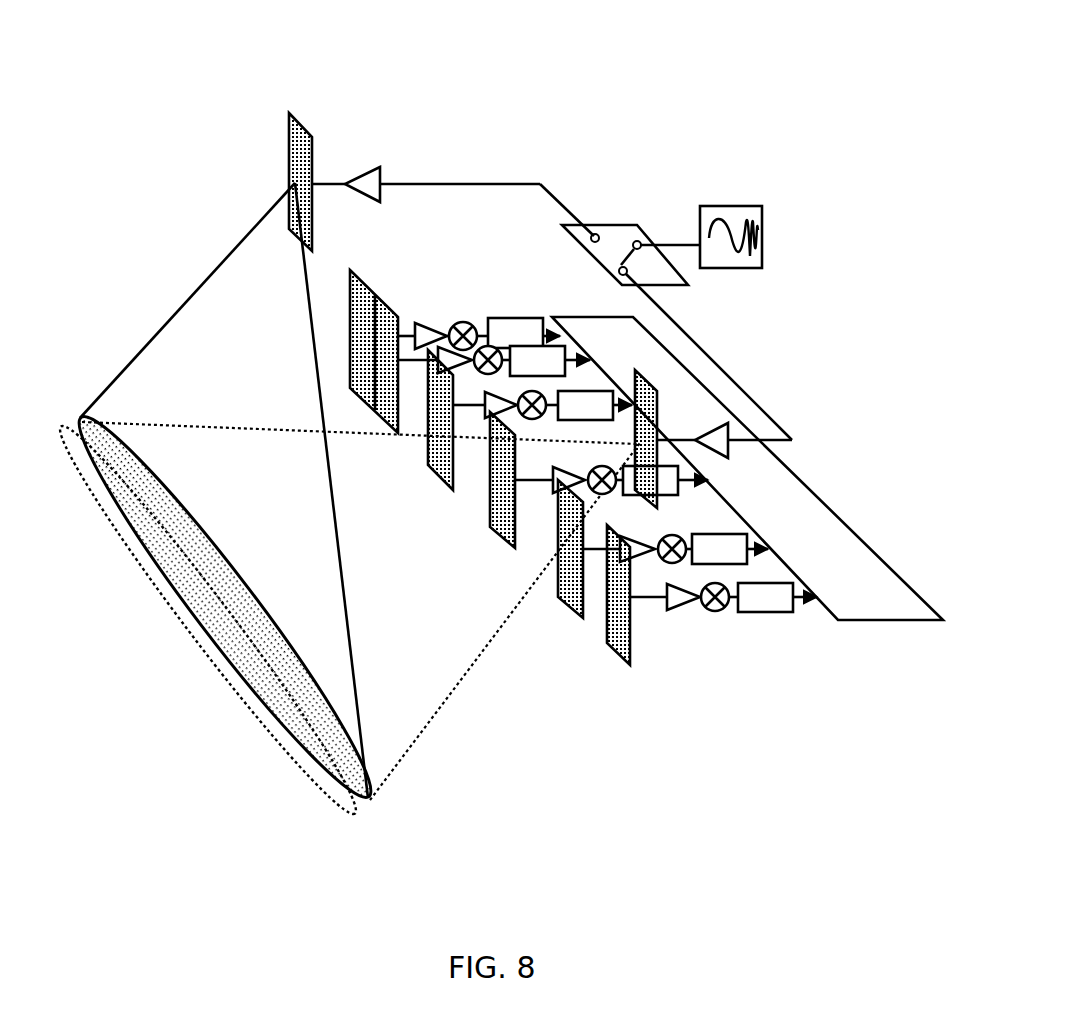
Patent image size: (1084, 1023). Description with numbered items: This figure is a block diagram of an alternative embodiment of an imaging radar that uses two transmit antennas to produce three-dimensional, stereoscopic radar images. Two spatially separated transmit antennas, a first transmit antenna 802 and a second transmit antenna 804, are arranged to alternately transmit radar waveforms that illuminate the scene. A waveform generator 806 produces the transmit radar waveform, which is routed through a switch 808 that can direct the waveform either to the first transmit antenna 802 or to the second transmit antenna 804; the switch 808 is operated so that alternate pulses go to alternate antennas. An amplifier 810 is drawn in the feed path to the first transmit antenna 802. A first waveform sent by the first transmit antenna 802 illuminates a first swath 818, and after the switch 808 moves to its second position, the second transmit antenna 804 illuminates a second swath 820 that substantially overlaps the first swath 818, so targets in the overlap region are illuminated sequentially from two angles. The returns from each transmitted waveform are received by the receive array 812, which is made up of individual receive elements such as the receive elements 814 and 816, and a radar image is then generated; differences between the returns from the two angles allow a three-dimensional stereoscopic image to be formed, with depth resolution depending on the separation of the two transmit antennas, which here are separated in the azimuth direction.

The first transmit antenna 802 is at (303, 130).
The second transmit antenna 804 is at (643, 382).
The waveform generator 806 is at (736, 205).
The switch 808 is at (615, 223).
The transmit amplifier 810 is at (382, 164).
The receive array 812 is at (652, 641).
The receive element 814 is at (618, 654).
The receive element 816 is at (436, 466).
The first swath 818 is at (257, 597).
The second swath 820 is at (92, 500).